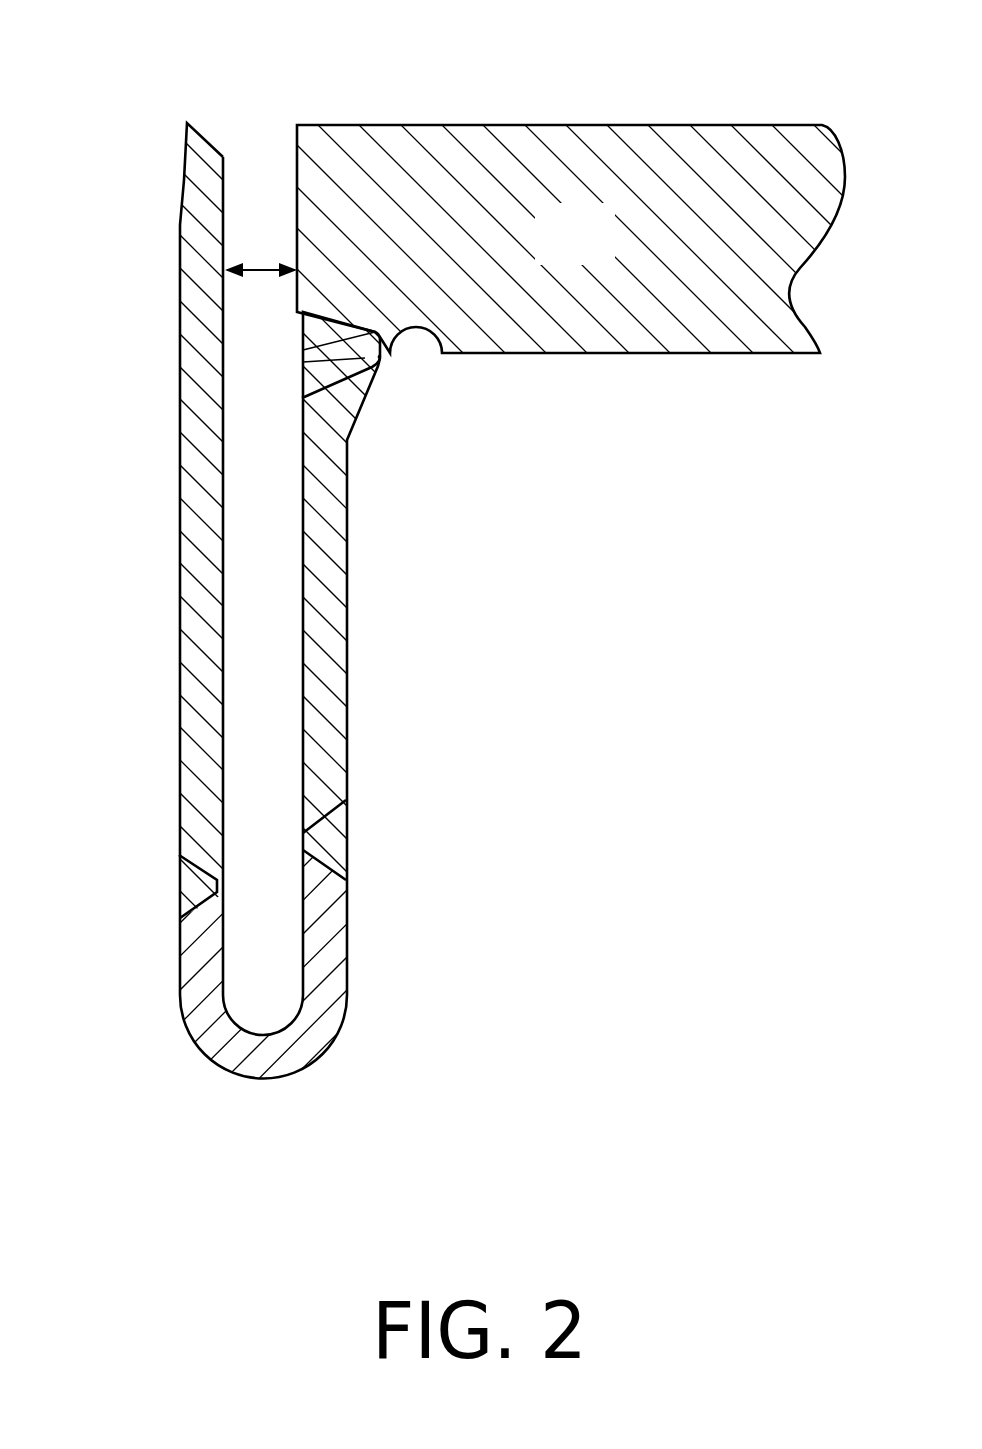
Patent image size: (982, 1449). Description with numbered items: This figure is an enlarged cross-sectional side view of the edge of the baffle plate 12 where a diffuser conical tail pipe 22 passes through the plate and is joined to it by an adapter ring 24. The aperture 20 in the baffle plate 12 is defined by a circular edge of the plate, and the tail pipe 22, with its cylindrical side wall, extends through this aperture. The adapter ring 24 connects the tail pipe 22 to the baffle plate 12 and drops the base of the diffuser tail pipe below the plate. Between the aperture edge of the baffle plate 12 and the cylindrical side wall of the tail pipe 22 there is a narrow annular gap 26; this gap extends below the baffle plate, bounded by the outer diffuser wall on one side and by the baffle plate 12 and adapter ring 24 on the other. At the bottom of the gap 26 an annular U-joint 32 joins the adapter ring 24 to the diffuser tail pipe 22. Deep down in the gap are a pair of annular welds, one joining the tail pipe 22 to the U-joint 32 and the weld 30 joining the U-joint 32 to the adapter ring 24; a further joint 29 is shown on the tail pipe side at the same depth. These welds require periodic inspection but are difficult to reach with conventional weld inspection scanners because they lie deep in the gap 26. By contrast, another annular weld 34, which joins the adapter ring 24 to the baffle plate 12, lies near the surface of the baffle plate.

The baffle plate 12 is at (595, 253).
The aperture 20 is at (282, 633).
The diffuser conical tail pipe 22 is at (178, 432).
The adapter ring 24 is at (345, 687).
The annular gap 26 is at (260, 267).
The first wedge / protrusion 29 is at (192, 886).
The weld 30 is at (346, 843).
The U-joint 32 is at (288, 1071).
The annular weld 34 is at (378, 368).